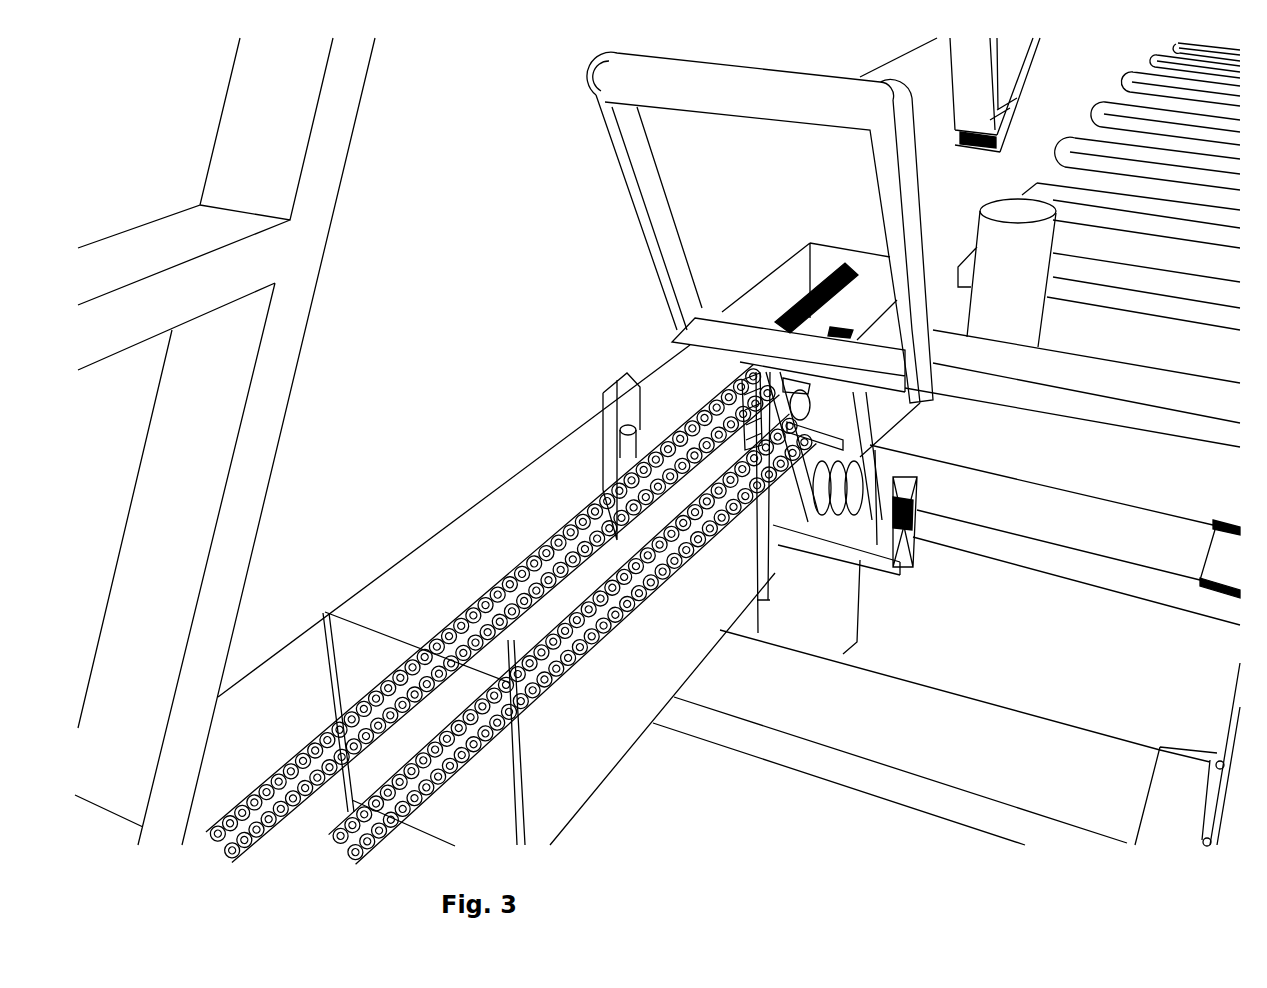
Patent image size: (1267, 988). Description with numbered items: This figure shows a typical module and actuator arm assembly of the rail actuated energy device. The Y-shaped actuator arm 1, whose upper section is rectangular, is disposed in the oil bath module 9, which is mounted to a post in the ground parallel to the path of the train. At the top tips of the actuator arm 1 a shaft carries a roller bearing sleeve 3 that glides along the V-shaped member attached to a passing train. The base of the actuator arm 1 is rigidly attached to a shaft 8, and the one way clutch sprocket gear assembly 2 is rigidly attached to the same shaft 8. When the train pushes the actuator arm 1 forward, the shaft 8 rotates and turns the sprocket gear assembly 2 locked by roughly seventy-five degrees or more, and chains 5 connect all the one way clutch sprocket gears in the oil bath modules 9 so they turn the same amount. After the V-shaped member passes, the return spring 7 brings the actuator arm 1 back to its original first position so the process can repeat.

The actuator arm 1 is at (737, 334).
The one way clutch sprocket gear assembly 2 is at (697, 477).
The roller bearing sleeve 3 is at (752, 102).
The chains 5 is at (768, 313).
The return spring 7 is at (812, 500).
The shaft 8 is at (622, 440).
The oil bath module 9 is at (712, 640).